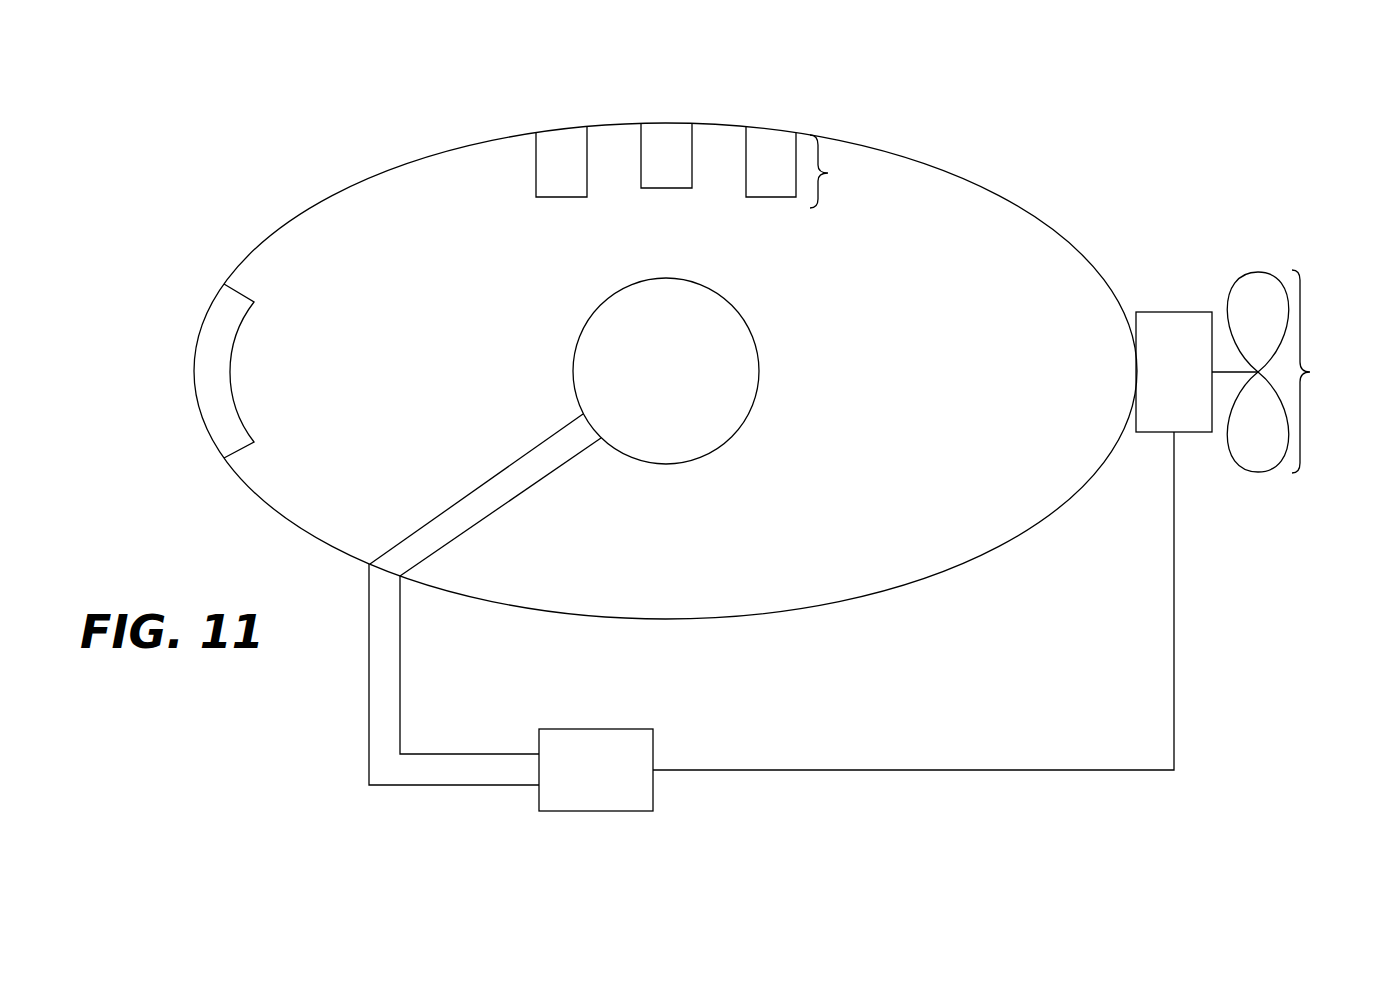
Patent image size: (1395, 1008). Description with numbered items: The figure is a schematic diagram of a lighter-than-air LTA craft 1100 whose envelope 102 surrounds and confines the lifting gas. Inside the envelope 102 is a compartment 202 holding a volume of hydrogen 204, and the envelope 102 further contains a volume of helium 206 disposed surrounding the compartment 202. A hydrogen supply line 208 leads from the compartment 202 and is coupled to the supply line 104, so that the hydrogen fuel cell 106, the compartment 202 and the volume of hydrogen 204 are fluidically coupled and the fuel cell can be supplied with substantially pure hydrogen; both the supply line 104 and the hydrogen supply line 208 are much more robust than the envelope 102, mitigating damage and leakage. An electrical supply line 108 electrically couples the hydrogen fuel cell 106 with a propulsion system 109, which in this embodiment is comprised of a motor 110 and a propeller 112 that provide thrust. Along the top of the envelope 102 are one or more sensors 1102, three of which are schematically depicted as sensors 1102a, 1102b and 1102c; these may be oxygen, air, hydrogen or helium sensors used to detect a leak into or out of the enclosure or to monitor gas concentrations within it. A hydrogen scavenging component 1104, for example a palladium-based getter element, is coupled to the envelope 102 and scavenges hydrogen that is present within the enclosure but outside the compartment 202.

The LTA craft 1100 is at (1140, 112).
The envelope 102 is at (378, 174).
The one or more sensors 1102 is at (853, 171).
The sensor 1102a is at (565, 147).
The sensor 1102b is at (677, 140).
The sensor 1102c is at (783, 148).
The hydrogen scavenging component 1104 is at (218, 413).
The compartment 202 is at (573, 372).
The volume of hydrogen 204 is at (706, 385).
The volume of helium 206 is at (995, 265).
The hydrogen supply line 208 is at (493, 510).
The supply line 104 is at (369, 690).
The hydrogen fuel cell 106 is at (590, 812).
The electrical supply line 108 is at (978, 771).
The motor 110 is at (1175, 312).
The propulsion system 109 is at (1287, 371).
The propeller 112 is at (1258, 472).